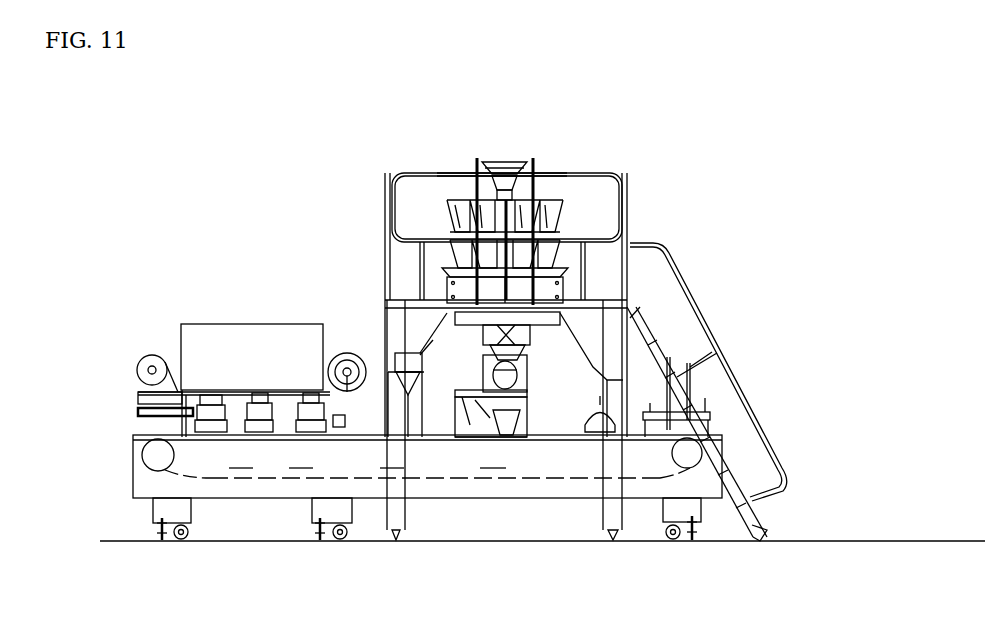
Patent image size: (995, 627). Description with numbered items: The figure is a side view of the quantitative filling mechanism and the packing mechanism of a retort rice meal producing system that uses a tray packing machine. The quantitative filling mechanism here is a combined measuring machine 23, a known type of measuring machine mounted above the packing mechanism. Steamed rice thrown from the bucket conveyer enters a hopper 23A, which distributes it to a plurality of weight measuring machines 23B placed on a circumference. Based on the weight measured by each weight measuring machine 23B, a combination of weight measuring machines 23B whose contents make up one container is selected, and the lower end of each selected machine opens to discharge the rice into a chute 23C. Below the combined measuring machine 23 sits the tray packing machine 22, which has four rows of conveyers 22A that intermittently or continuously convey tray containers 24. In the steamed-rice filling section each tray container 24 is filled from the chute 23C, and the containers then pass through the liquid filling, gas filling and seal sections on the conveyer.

The tray packing machine 22 is at (282, 302).
The conveyers 22A is at (557, 482).
The combined measuring machine 23 is at (410, 212).
The hopper 23A is at (516, 164).
The weight measuring machines 23B is at (522, 196).
The chute 23C is at (523, 263).
The tray containers 24 is at (508, 438).